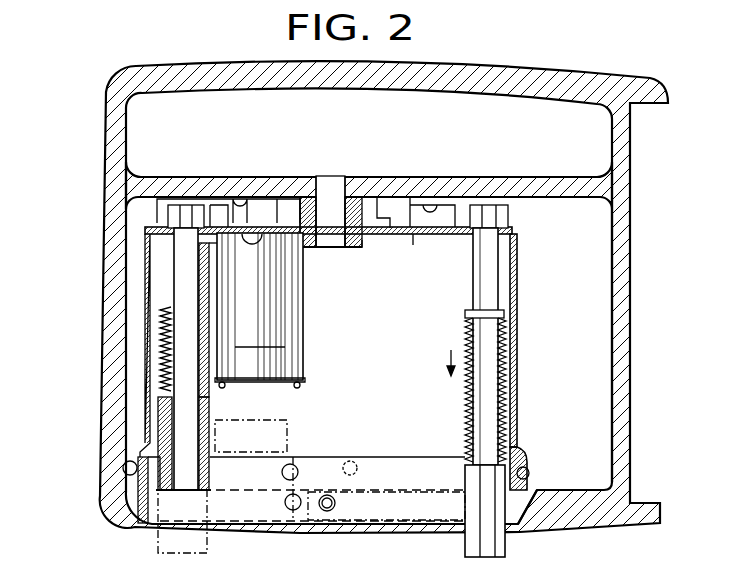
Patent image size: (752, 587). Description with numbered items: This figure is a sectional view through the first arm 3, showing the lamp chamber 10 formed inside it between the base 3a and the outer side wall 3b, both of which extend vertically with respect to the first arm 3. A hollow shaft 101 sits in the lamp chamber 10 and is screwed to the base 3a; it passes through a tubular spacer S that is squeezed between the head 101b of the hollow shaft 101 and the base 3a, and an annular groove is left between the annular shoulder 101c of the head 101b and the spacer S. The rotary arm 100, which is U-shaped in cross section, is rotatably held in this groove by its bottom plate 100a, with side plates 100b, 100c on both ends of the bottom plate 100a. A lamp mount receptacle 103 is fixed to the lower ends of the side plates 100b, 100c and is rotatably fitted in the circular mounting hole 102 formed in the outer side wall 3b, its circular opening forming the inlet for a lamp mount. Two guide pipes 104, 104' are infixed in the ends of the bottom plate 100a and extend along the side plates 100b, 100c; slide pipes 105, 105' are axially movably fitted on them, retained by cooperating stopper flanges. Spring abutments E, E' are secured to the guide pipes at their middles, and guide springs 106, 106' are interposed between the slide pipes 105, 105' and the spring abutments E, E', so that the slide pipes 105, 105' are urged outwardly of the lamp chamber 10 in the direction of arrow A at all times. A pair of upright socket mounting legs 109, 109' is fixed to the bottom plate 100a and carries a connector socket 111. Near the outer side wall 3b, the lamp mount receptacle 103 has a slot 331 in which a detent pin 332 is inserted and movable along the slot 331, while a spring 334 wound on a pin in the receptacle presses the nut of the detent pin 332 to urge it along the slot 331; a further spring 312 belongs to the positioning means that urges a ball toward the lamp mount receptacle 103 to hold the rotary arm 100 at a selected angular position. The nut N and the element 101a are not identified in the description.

The first arm 3 is at (116, 96).
The base 3a is at (448, 195).
The outer side wall 3b is at (588, 502).
The lamp chamber 10 is at (574, 207).
The nut N is at (180, 205).
The tubular spacer S is at (365, 228).
The hollow shaft 101 is at (347, 198).
The bore of support post 101a is at (331, 195).
The head 101b is at (364, 246).
The annular shoulder 101c is at (382, 240).
The rotary arm 100 is at (514, 233).
The bottom plate 100a is at (403, 236).
The side plate 100b is at (148, 337).
The side plate 100c is at (515, 345).
The circular mounting hole 102 is at (530, 480).
The lamp mount receptacle 103 is at (140, 503).
The guide pipe 104 is at (119, 359).
The guide pipe 104' is at (524, 346).
The slide pipe 105 is at (125, 443).
The slide pipe 105' is at (514, 526).
The guide spring 106 is at (105, 350).
The guide spring 106' is at (520, 390).
The socket mounting leg 109 is at (124, 320).
The socket mounting leg 109' is at (289, 310).
The connector socket 111 is at (270, 358).
The spring abutment E is at (229, 276).
The spring abutment E' is at (468, 299).
The arrow A is at (453, 349).
The spring 312 is at (335, 512).
The slot 331 is at (294, 466).
The detent pin 332 is at (295, 512).
The spring 334 is at (305, 490).